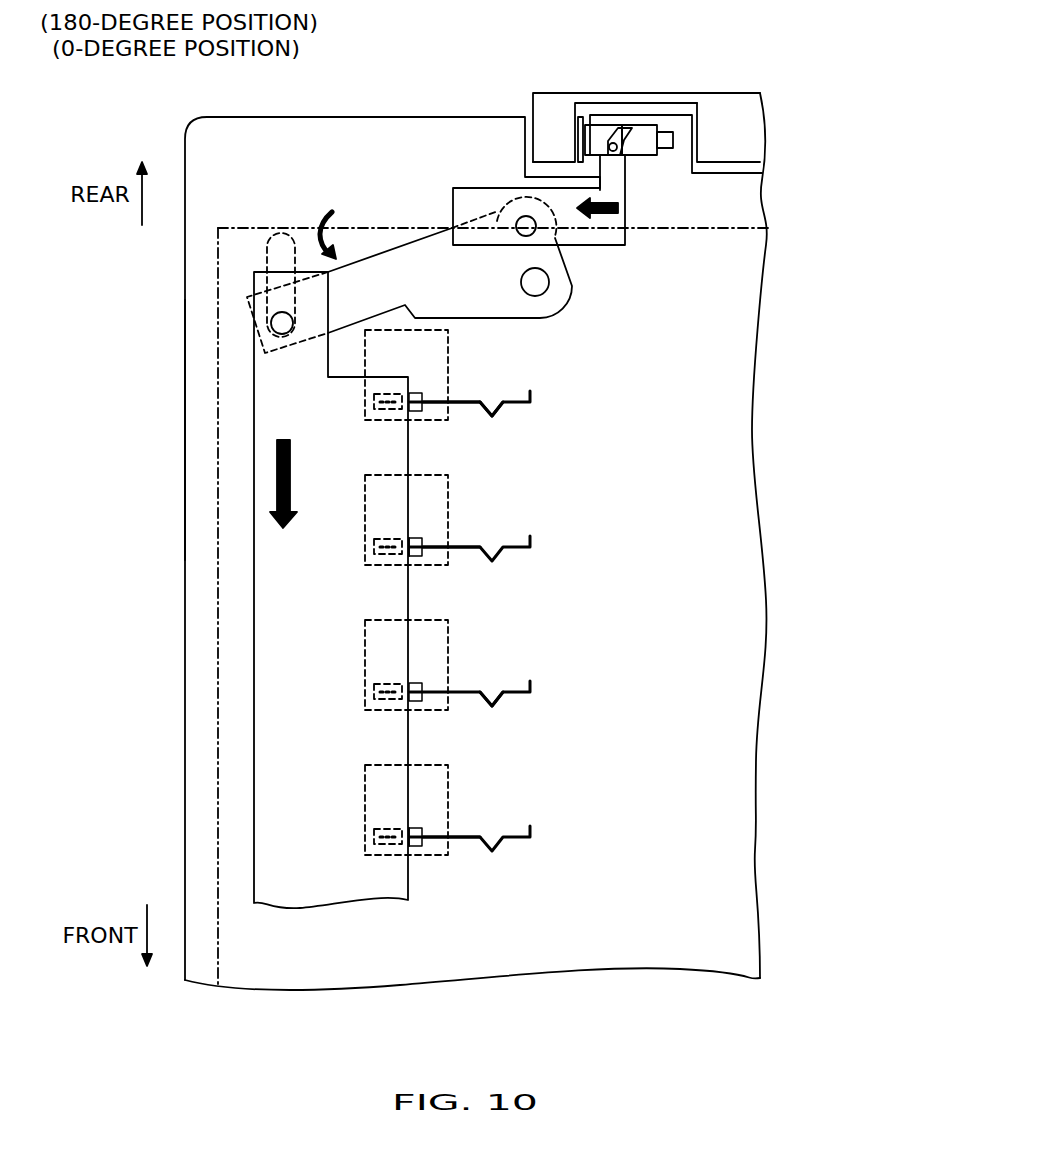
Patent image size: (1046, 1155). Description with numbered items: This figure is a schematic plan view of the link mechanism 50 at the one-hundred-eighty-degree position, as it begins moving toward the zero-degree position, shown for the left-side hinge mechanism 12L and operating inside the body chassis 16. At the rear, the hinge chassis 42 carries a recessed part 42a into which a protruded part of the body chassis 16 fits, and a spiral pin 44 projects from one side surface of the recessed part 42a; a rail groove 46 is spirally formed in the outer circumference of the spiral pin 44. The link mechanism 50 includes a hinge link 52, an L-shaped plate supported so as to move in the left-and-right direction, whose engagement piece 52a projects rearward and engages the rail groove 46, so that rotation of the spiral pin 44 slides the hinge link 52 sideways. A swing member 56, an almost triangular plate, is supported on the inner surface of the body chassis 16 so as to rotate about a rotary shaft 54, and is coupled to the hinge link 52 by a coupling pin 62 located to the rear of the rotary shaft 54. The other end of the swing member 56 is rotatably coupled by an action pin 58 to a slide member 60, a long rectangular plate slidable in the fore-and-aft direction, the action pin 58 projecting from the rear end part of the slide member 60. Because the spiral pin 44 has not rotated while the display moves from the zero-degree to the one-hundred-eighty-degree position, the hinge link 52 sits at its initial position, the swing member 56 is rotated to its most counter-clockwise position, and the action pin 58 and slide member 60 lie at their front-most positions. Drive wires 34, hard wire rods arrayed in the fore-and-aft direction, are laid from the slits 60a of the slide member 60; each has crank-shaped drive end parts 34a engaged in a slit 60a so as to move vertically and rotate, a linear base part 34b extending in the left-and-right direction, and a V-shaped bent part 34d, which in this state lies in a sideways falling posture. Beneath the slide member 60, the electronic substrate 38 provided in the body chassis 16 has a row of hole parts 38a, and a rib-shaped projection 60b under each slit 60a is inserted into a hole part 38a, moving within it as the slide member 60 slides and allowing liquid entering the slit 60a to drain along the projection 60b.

The left-side hinge mechanism 12L is at (742, 86).
The body chassis 16 is at (186, 422).
The drive wire 34 is at (513, 405).
The drive end part 34a is at (375, 401).
The base part 34b is at (463, 405).
The bent part 34d is at (492, 417).
The electronic substrate 38 is at (216, 782).
The hole part 38a is at (438, 364).
The hinge chassis 42 is at (550, 118).
The recessed part 42a is at (698, 132).
The spiral pin 44 is at (647, 137).
The rail groove 46 is at (630, 130).
The link mechanism 50 is at (379, 172).
The hinge link 52 is at (626, 216).
The engagement piece 52a is at (610, 133).
The rotary shaft 54 is at (535, 282).
The swing member 56 is at (508, 324).
The action pin 58 is at (282, 323).
The slide member 60 is at (254, 502).
The slit 60a is at (393, 414).
The projection 60b is at (415, 539).
The coupling pin 62 is at (526, 226).